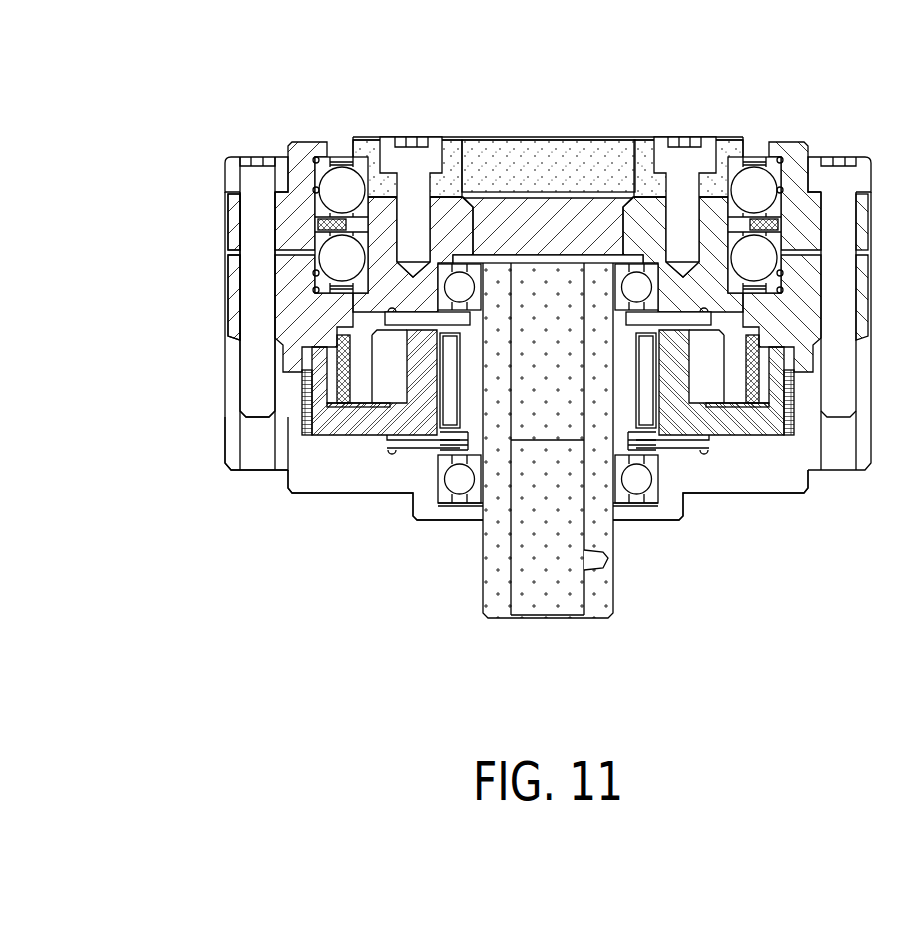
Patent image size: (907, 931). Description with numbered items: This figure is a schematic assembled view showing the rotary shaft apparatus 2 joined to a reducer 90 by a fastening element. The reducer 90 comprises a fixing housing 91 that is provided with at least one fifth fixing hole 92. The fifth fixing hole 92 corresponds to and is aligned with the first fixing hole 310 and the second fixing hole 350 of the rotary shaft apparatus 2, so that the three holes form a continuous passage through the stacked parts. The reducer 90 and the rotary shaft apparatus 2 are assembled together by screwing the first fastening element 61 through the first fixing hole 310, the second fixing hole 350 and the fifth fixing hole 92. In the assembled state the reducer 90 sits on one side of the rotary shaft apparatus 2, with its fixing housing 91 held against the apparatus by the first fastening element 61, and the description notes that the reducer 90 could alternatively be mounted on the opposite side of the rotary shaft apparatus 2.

The rotary shaft apparatus 2 is at (335, 115).
The first fixing hole 310 is at (240, 210).
The first fastening element 61 is at (248, 267).
The second fixing hole 350 is at (240, 393).
The fifth fixing hole 92 is at (245, 433).
The fixing housing 91 is at (340, 475).
The reducer 90 is at (440, 577).